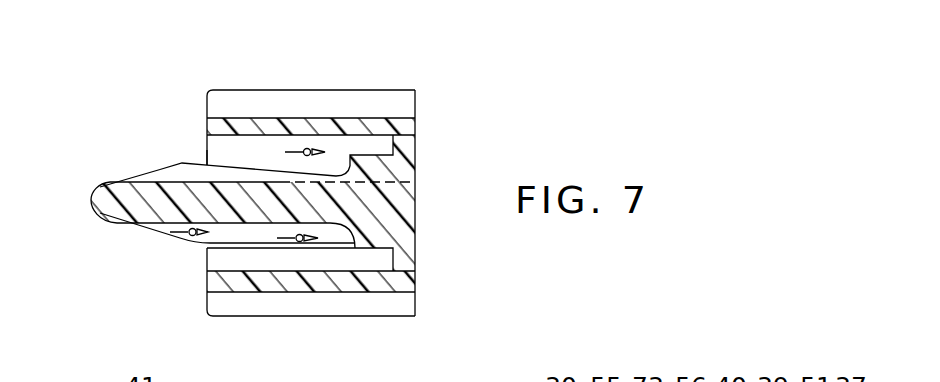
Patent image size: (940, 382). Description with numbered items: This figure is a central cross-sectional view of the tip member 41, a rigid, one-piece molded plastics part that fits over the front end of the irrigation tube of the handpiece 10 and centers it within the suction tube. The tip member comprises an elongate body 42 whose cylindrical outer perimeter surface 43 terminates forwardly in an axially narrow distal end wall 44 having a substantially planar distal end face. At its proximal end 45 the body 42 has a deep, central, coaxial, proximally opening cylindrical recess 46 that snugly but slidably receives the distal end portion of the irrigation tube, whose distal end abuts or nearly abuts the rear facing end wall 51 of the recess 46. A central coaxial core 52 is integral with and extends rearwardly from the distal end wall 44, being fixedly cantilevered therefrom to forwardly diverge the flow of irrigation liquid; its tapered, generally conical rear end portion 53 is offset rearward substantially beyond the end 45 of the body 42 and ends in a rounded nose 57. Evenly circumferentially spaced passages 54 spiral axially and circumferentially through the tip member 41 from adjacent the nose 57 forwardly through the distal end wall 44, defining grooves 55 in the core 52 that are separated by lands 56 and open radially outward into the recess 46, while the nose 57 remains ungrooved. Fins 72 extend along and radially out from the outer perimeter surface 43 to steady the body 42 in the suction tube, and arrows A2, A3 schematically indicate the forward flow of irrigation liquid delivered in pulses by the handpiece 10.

The tip member 41 is at (305, 328).
The elongate body 42 is at (354, 284).
The outer perimeter surface 43 is at (335, 287).
The distal end wall 44 is at (408, 143).
The proximal end 45 is at (182, 160).
The recess 46 is at (282, 137).
The rear facing end wall of the recess 51 is at (392, 137).
The core 52 is at (117, 163).
The rear end portion 53 is at (132, 203).
The passages 54 is at (172, 168).
The grooves 55 is at (162, 193).
The lands 56 is at (221, 165).
The nose 57 is at (92, 200).
The fins 72 is at (288, 100).
The arrow A2 is at (180, 234).
The arrow A3 is at (290, 238).
The handpiece 10 is at (476, 368).